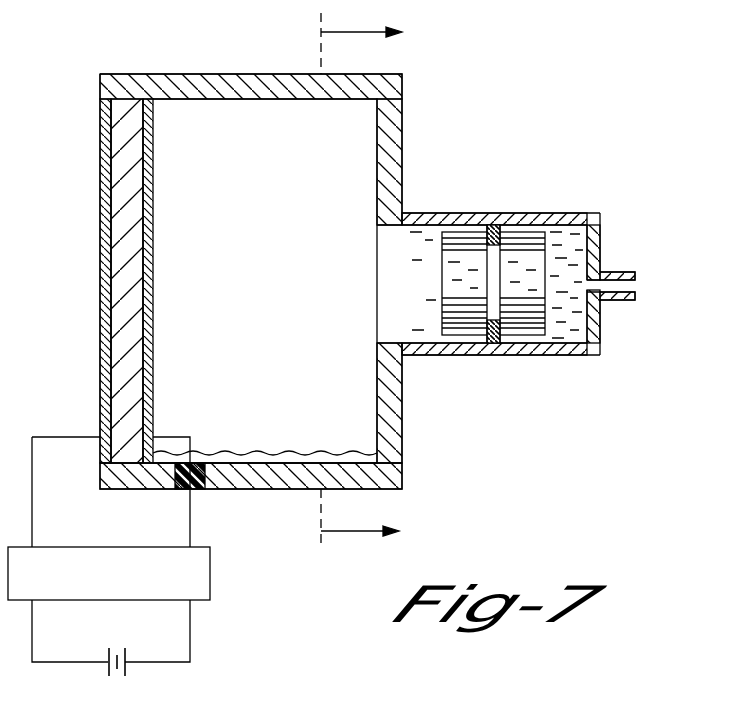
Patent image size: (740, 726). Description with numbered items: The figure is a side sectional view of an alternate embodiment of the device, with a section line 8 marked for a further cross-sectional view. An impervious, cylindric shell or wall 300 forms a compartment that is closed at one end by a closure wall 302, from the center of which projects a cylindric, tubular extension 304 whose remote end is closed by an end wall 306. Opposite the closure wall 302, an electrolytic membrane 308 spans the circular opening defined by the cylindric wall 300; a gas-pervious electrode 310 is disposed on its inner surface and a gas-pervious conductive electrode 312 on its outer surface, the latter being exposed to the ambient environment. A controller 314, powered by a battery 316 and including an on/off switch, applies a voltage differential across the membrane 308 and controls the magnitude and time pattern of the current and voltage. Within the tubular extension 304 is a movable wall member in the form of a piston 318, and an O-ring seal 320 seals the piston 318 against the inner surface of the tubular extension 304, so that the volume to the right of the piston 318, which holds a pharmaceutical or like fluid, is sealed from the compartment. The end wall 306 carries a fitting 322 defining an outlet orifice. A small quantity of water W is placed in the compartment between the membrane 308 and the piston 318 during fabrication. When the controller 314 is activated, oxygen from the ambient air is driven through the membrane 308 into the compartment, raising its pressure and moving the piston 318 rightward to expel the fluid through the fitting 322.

The cylindric shell or wall 300 is at (178, 73).
The closure wall 302 is at (392, 125).
The tubular extension 304 is at (428, 213).
The end wall 306 is at (600, 230).
The electrolytic membrane 308 is at (146, 168).
The gas-pervious electrode 310 is at (128, 190).
The gas-pervious conductive electrode 312 is at (100, 188).
The controller 314 is at (96, 549).
The battery 316 is at (124, 677).
The piston 318 is at (448, 280).
The O-ring seal 320 is at (490, 355).
The fitting 322 is at (633, 271).
The water W is at (218, 455).
The section line 8- 8 is at (343, 283).